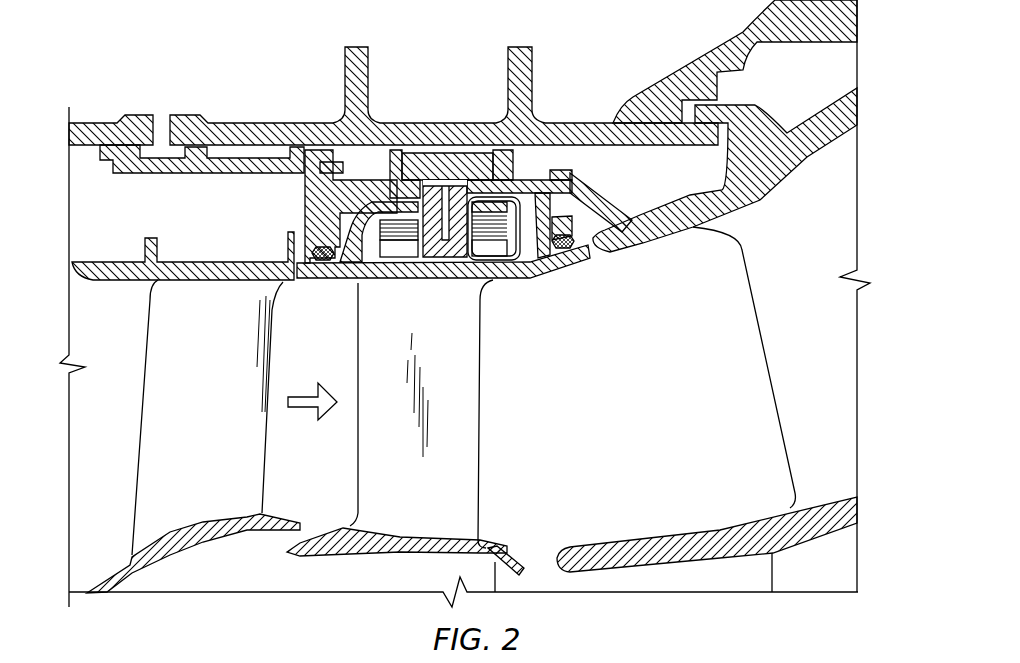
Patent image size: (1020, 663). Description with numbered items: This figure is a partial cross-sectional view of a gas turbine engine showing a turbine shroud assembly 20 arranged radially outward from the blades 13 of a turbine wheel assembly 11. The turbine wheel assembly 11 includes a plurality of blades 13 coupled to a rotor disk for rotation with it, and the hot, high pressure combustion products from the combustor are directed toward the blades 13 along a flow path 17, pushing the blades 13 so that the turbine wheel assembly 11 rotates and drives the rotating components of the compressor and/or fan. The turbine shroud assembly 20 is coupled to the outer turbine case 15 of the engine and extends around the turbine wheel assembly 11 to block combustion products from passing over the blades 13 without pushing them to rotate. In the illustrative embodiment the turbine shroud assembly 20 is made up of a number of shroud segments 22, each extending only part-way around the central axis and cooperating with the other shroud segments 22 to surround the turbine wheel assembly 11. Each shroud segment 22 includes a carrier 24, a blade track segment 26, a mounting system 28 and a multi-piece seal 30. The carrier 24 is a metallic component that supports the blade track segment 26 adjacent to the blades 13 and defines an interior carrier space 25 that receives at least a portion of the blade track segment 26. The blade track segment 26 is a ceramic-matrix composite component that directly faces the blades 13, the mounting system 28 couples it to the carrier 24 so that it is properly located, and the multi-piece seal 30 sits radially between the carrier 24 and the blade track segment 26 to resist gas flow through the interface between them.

The turbine wheel assembly 11 is at (512, 522).
The blades 13 is at (462, 437).
The outer turbine case 15 is at (232, 112).
The flow path 17 is at (293, 408).
The turbine shroud assembly 20 is at (618, 172).
The shroud segment 22 is at (552, 158).
The carrier 24 is at (292, 193).
The interior carrier space 25 is at (379, 184).
The blade track segment 26 is at (543, 298).
The mounting system 28 is at (438, 145).
The multi-piece seal 30 is at (322, 272).